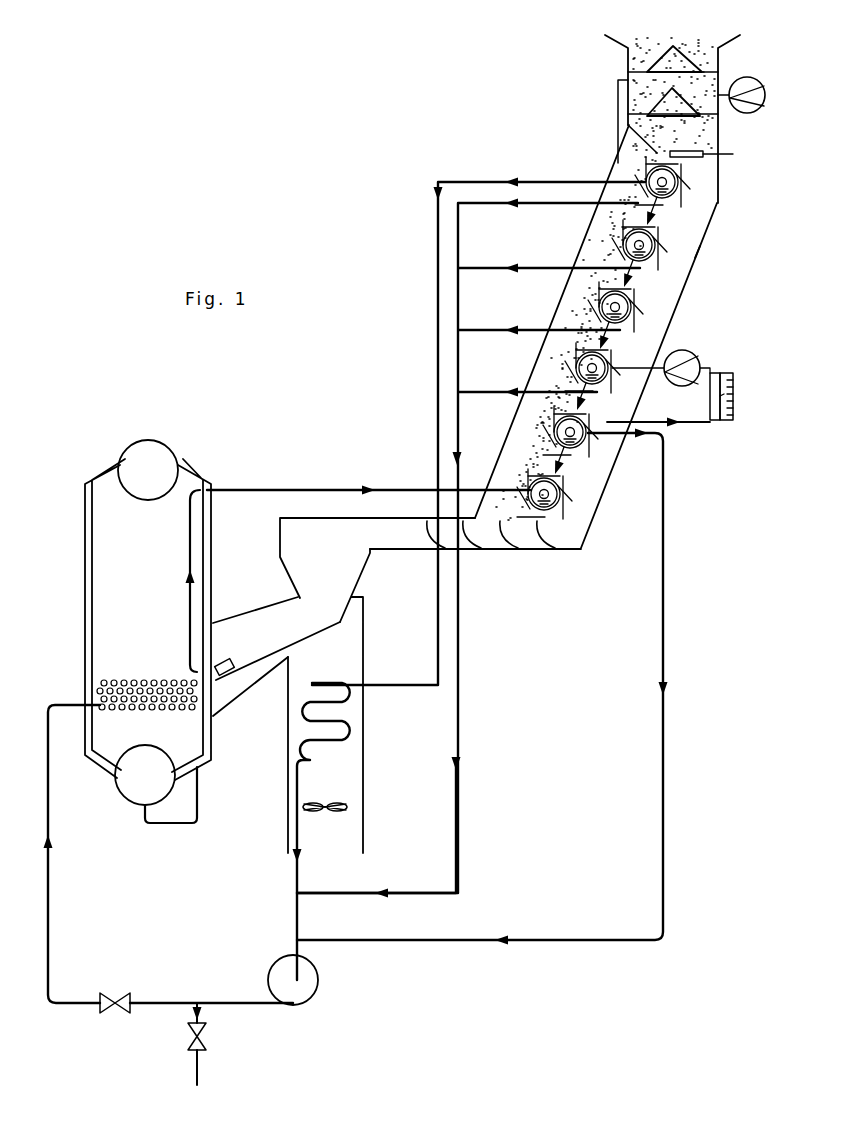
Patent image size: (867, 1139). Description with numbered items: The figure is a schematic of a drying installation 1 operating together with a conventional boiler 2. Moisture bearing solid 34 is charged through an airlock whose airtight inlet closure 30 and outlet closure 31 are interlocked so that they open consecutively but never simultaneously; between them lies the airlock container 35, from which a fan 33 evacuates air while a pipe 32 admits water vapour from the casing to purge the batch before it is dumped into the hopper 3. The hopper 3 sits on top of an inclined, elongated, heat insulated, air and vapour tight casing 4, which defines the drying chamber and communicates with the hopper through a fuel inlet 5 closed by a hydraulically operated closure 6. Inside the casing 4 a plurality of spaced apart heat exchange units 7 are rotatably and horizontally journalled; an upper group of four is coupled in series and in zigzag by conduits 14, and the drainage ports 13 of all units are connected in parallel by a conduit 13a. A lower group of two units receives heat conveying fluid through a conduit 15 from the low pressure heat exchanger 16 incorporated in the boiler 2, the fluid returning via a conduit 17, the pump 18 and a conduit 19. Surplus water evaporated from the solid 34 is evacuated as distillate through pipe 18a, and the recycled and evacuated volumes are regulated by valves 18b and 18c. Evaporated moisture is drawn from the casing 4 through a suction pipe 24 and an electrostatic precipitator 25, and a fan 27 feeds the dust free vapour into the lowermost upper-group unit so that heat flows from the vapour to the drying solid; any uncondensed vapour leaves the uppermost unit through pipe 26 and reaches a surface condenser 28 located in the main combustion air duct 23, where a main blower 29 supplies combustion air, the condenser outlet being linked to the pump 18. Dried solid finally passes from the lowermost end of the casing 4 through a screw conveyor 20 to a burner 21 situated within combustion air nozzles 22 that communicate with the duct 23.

The drying installation 1 is at (680, 314).
The boiler 2 is at (78, 520).
The hopper 3 is at (722, 134).
The casing 4 is at (700, 248).
The fuel inlet 5 is at (661, 150).
The closure 6 is at (688, 150).
The heat exchange unit 7 is at (690, 180).
The drainage port 13 is at (472, 390).
The conduit 13a is at (453, 825).
The conduits 14 is at (630, 278).
The conduit 15 is at (260, 490).
The low pressure heat exchanger 16 is at (118, 682).
The conduit 17 is at (665, 580).
The pump 18 is at (312, 990).
The pipe 18a is at (197, 1073).
The valve 18b is at (120, 998).
The valve 18c is at (204, 1038).
The conduit 19 is at (50, 930).
The screw conveyor 20 is at (497, 550).
The burner 21 is at (277, 629).
The combustion air nozzles 22 is at (215, 643).
The main combustion air duct 23 is at (345, 640).
The suction pipe 24 is at (688, 424).
The electrostatic precipitator 25 is at (736, 392).
The pipe 26 is at (466, 181).
The fan 27 is at (699, 357).
The surface condenser 28 is at (310, 685).
The main blower 29 is at (306, 806).
The inlet closure 30 is at (677, 56).
The outlet closure 31 is at (683, 95).
The pipe 32 is at (618, 96).
The fan 33 is at (765, 90).
The moisture bearing solid 34 is at (633, 46).
The airlock container 35 is at (700, 78).